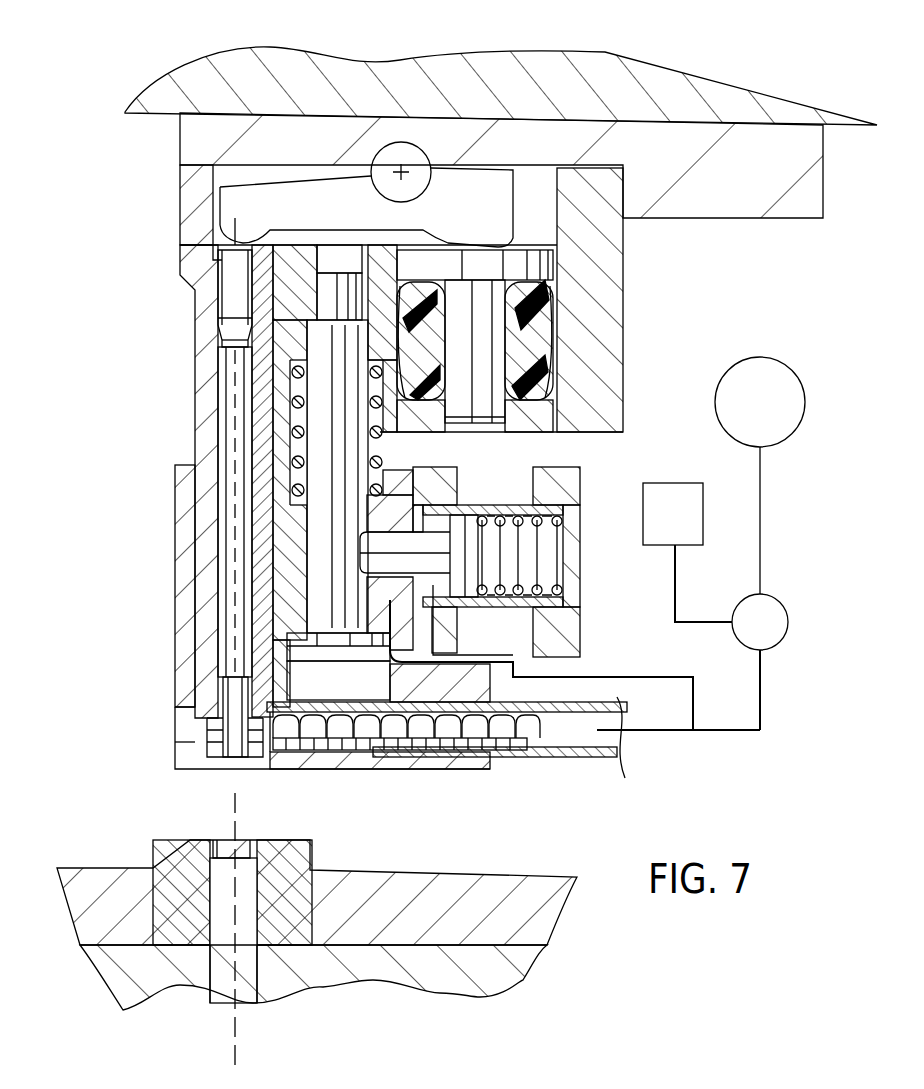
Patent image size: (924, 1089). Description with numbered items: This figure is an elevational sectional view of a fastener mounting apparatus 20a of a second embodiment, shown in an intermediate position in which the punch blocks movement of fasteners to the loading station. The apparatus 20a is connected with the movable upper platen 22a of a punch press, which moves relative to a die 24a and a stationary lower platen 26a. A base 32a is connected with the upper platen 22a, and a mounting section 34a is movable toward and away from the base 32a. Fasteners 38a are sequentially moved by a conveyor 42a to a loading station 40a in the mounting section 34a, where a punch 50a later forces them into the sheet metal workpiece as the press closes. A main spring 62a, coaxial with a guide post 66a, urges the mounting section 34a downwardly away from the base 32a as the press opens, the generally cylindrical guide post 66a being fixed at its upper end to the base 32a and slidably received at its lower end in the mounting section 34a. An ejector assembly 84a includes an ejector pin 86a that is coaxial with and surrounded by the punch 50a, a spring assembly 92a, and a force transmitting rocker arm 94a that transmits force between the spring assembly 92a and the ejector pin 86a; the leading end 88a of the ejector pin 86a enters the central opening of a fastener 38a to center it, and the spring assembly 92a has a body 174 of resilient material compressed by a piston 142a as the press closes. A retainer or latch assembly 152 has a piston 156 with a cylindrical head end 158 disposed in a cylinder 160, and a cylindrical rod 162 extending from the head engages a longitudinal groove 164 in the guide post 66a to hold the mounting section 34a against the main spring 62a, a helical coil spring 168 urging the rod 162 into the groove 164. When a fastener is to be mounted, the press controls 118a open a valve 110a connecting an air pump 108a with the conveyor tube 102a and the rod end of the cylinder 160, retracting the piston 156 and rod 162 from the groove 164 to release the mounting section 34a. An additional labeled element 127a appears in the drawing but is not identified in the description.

The fastener mounting apparatus 20a is at (145, 490).
The upper platen 22a is at (535, 88).
The die 24a is at (188, 873).
The lower platen 26a is at (495, 975).
The base 32a is at (623, 295).
The mounting section 34a is at (155, 627).
The fasteners 38a is at (455, 740).
The loading station 40a is at (210, 742).
The conveyor 42a is at (618, 768).
The punch 50a is at (188, 564).
The main spring 62a is at (212, 446).
The guide post 66a is at (340, 450).
The ejector assembly 84a is at (165, 243).
The ejector pin 86a is at (212, 392).
The leading end 88a is at (225, 720).
The spring assembly 92a is at (560, 337).
The rocker arm 94a is at (323, 197).
The conveyor tube 102a is at (565, 760).
The air pump 108a is at (735, 383).
The valve 110a is at (772, 605).
The press controls 118a is at (680, 510).
The slide base 127a is at (318, 760).
The piston 142a is at (520, 261).
The latch assembly 152 is at (595, 543).
The piston 156 is at (462, 503).
The head end 158 is at (467, 565).
The cylinder 160 is at (518, 507).
The piston rod 162 is at (368, 560).
The groove 164 is at (365, 514).
The helical coil spring 168 is at (537, 568).
The body of resilient material 174 is at (527, 365).